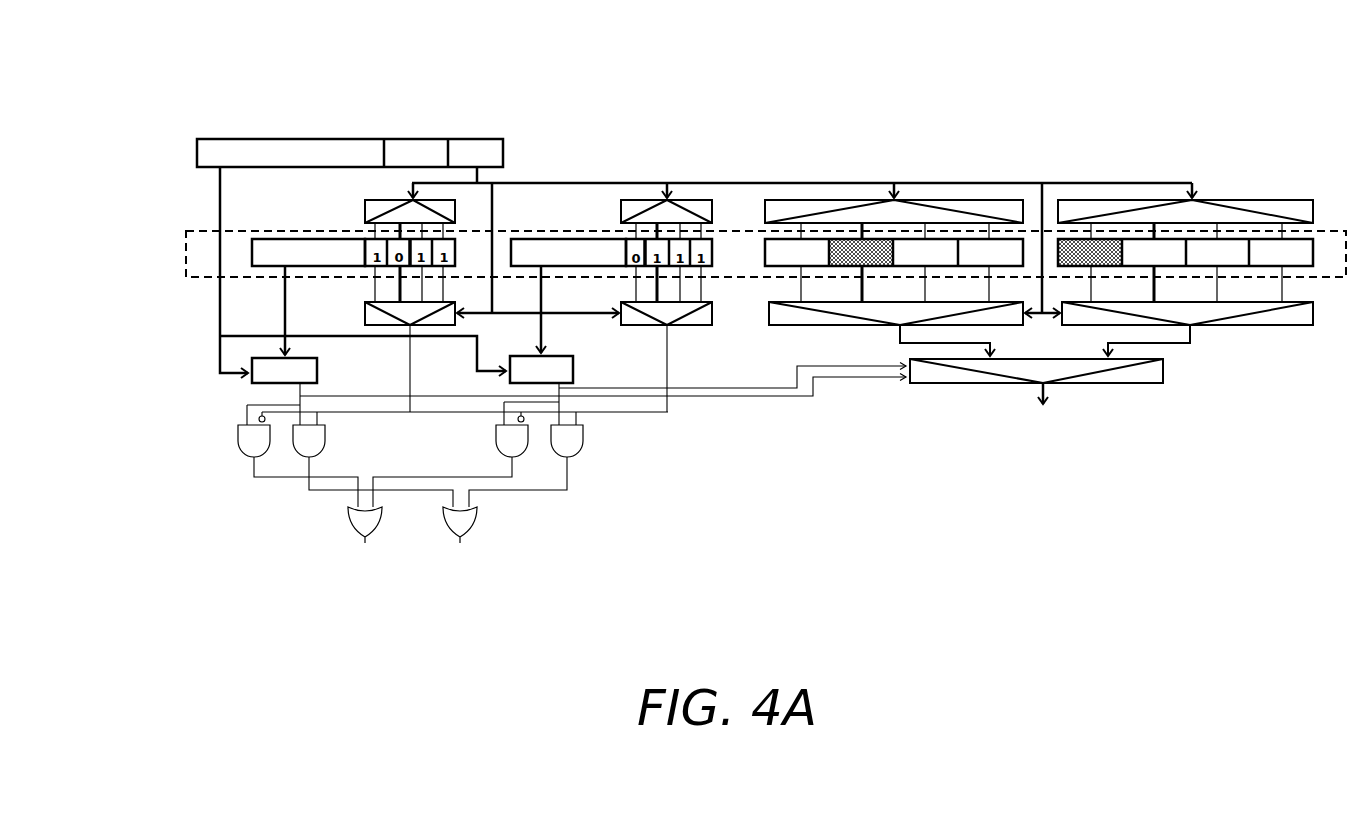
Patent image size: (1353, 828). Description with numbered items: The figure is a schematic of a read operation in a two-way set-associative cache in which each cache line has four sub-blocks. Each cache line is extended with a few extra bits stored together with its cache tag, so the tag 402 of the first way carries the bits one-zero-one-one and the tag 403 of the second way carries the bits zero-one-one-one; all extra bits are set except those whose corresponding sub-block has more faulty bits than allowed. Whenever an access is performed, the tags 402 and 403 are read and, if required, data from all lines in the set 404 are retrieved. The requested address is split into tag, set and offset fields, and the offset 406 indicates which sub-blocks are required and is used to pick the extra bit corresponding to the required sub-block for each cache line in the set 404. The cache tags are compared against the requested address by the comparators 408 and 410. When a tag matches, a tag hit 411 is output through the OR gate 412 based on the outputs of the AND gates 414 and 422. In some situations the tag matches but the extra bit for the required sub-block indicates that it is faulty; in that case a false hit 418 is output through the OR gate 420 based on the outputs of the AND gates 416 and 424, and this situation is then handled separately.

The tag 402 is at (253, 266).
The tag 403 is at (545, 240).
The set 404 is at (186, 252).
The offset 406 is at (477, 105).
The comparator 408 is at (258, 371).
The comparator 410 is at (568, 368).
The tag hit 411 is at (472, 579).
The OR gate 412 is at (462, 521).
The AND gate 414 is at (567, 441).
The AND gate 416 is at (254, 441).
The false hit 418 is at (358, 589).
The OR gate 420 is at (355, 521).
The AND gate 422 is at (309, 441).
The AND gate 424 is at (512, 441).